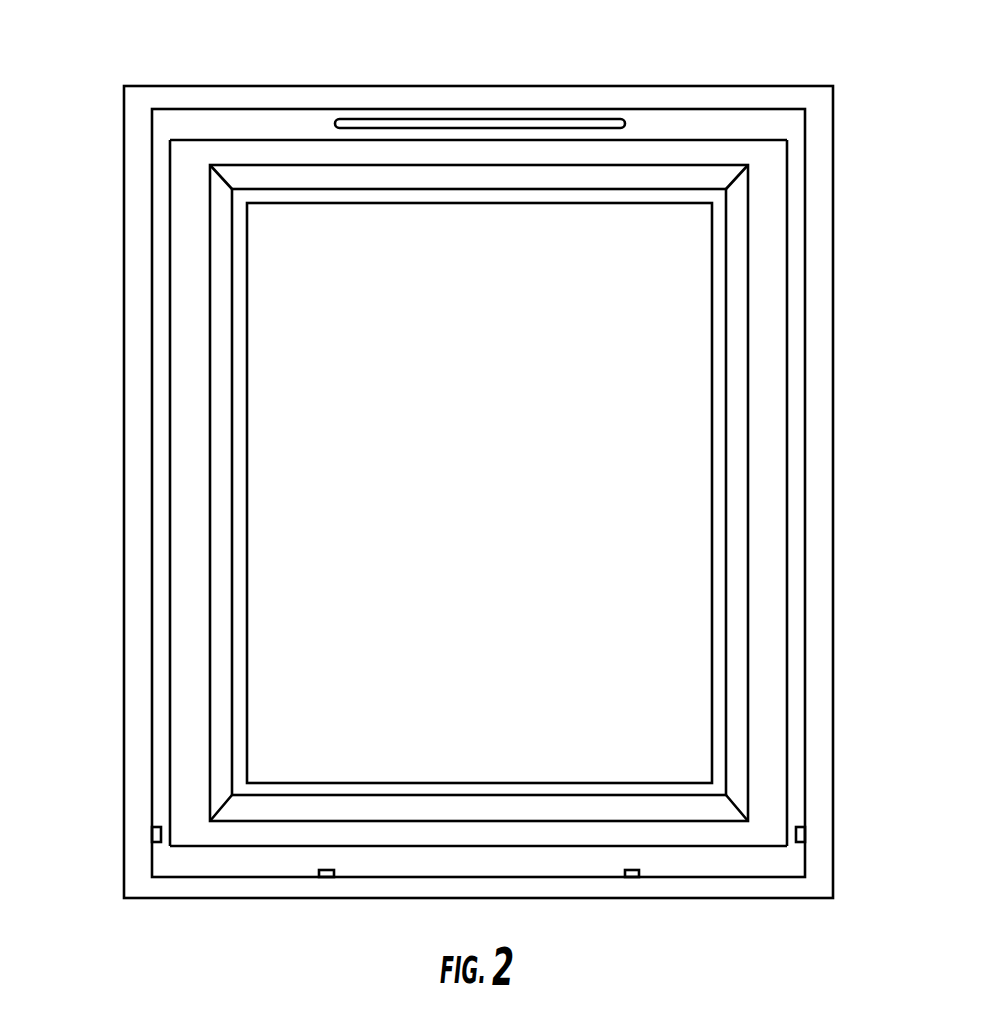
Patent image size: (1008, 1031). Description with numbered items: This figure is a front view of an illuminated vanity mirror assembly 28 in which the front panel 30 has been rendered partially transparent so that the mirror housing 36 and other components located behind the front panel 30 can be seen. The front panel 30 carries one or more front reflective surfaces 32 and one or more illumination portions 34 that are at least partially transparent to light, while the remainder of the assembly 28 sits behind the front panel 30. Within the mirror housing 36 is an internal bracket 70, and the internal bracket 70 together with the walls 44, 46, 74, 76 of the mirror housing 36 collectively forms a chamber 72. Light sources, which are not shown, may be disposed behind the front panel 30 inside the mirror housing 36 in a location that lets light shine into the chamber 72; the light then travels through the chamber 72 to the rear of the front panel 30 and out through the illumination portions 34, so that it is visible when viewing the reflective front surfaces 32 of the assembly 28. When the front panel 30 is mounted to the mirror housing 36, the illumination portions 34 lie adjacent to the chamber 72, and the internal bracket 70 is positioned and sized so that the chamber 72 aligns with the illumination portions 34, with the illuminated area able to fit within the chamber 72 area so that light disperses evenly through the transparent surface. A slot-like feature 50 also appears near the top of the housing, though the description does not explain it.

The illuminated vanity mirror assembly 28 is at (100, 75).
The front panel 30 is at (120, 163).
The front reflective surface 32 is at (262, 397).
The illumination portion 34 is at (192, 507).
The mirror housing 36 is at (150, 603).
The wall 44 is at (645, 118).
The wall 46 is at (671, 862).
The slot 50 is at (574, 121).
The internal bracket 70 is at (457, 812).
The chamber 72 is at (772, 210).
The wall 74 is at (167, 747).
The wall 76 is at (793, 675).